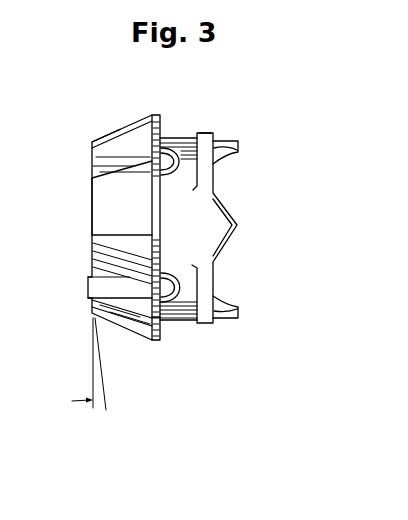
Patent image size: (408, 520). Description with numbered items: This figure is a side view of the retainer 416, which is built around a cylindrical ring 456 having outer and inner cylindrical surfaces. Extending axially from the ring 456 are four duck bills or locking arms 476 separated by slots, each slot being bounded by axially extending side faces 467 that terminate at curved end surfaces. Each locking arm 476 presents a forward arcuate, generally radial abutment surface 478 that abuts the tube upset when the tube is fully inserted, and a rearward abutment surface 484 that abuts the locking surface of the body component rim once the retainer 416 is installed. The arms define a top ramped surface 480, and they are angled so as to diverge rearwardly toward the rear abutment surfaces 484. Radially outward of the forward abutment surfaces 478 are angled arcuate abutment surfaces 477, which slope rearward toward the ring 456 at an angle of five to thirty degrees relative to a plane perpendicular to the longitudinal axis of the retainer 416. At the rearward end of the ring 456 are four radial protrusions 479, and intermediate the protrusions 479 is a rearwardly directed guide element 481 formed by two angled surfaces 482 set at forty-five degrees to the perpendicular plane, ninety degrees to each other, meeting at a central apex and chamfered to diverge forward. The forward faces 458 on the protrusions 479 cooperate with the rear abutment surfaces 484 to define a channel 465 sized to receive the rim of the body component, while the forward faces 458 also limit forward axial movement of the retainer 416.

The retainer 416 is at (84, 288).
The cylindrical ring 456 is at (175, 133).
The forward faces 458 is at (186, 325).
The channel 465 is at (189, 126).
The axially extending side faces 467 is at (100, 167).
The locking arms 476 is at (106, 237).
The angled arcuate abutment surfaces 477 is at (88, 141).
The forward abutment surfaces 478 is at (84, 181).
The radial protrusions 479 is at (208, 133).
The top ramped surface 480 is at (138, 119).
The guide element 481 is at (233, 132).
The angled surfaces 482 is at (233, 219).
The rearward abutment surfaces 484 is at (163, 330).